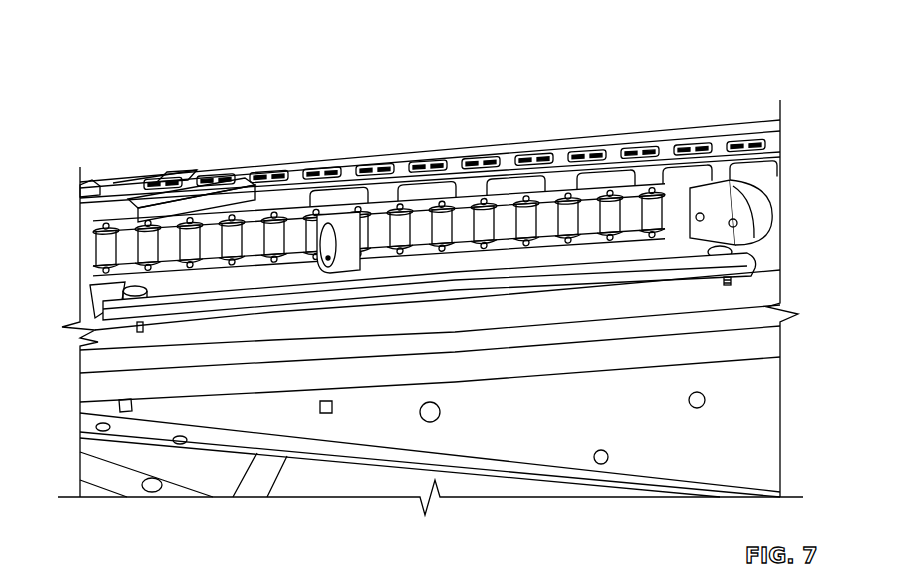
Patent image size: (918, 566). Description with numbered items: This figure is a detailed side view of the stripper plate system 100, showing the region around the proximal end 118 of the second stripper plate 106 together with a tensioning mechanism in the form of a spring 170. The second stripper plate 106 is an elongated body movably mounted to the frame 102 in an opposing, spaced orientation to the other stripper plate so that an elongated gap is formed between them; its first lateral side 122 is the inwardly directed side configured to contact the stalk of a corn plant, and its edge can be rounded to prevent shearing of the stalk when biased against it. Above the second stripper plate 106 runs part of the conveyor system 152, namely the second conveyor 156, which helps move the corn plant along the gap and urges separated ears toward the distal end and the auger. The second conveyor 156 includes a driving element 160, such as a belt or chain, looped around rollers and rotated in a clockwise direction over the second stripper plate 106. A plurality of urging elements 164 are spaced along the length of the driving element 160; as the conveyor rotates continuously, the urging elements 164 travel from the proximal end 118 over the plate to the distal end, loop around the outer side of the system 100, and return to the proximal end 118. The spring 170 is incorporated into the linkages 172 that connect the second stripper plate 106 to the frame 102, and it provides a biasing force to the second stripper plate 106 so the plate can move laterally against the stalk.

The stripper plate system 100 is at (118, 76).
The frame 102 is at (760, 390).
The second stripper plate 106 is at (92, 359).
The proximal end 118 is at (90, 324).
The first lateral side 122 is at (733, 320).
The conveyor system 152 is at (234, 155).
The second conveyor 156 is at (362, 145).
The driving element 160 is at (481, 202).
The urging elements 164 is at (765, 208).
The spring 170 is at (150, 293).
The linkages 172 is at (262, 293).